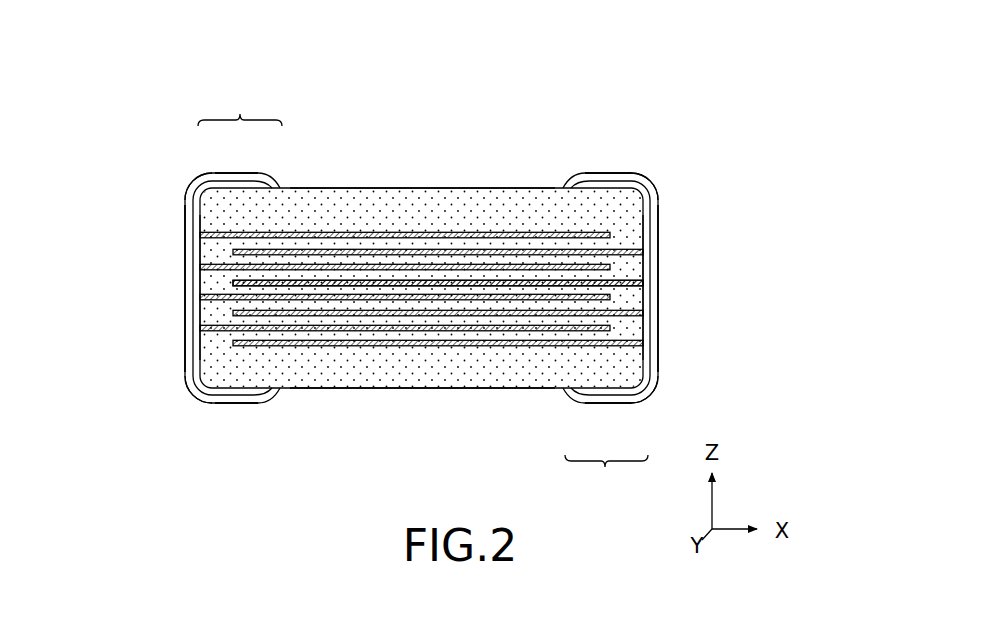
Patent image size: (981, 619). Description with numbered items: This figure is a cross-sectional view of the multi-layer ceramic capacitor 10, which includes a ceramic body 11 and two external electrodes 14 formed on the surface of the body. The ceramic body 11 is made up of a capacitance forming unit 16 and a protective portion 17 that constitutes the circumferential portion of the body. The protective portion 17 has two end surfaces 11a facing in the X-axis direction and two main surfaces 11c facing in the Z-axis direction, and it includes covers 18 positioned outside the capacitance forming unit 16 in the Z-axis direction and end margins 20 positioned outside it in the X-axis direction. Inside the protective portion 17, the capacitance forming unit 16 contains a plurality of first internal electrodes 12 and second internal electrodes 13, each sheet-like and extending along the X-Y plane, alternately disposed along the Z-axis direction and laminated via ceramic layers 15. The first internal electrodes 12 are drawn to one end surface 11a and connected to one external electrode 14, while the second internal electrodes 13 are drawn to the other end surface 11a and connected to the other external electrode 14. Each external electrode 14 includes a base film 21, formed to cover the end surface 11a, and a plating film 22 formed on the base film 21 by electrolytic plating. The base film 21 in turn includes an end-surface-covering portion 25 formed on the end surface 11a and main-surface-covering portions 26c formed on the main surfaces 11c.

The multi-layer ceramic capacitor 10 is at (247, 67).
The ceramic body 11 is at (317, 137).
The end surface 11a is at (198, 313).
The main surface 11c is at (410, 187).
The first internal electrode 12 is at (296, 327).
The second internal electrode 13 is at (488, 342).
The external electrode 14 is at (422, 293).
The ceramic layer 15 is at (470, 230).
The capacitance forming unit 16 is at (438, 283).
The protective portion 17 is at (423, 293).
The cover 18 is at (292, 188).
The end margin 20 is at (226, 192).
The base film 21 is at (189, 266).
The plating film 22 is at (186, 243).
The end-surface-covering portion 25 is at (422, 288).
The main-surface-covering portion 26c is at (436, 296).